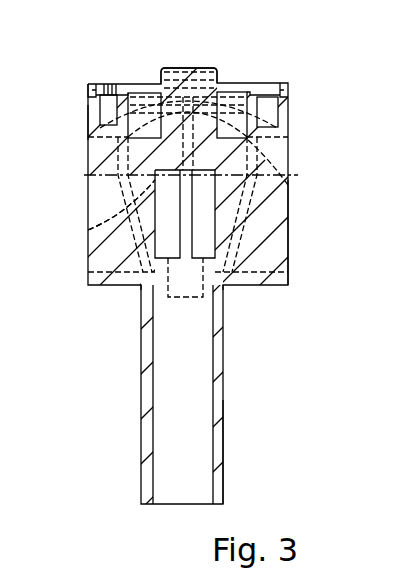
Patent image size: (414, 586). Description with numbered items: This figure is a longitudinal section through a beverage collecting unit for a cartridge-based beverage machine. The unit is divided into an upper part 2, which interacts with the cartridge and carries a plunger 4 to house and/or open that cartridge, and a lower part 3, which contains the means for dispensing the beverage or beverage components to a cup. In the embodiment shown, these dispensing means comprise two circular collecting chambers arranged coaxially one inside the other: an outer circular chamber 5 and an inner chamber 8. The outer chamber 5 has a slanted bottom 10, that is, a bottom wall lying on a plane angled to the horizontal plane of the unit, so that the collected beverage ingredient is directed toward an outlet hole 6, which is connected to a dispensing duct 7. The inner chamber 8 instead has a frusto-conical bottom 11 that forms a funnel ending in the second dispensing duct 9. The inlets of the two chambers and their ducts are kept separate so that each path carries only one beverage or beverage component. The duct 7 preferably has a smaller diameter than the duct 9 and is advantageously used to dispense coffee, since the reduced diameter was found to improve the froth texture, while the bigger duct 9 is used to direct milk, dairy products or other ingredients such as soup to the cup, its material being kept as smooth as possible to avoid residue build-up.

The upper part 2 is at (303, 170).
The lower part 3 is at (303, 498).
The plunger 4 is at (175, 90).
The outer circular collecting chamber 5 is at (110, 101).
The outlet hole 6 is at (351, 232).
The dispensing duct 7 is at (318, 463).
The inner collecting chamber 8 is at (236, 100).
The dispensing duct 9 is at (172, 387).
The slanted bottom 10 is at (88, 122).
The frusto-conical bottom 11 is at (88, 233).